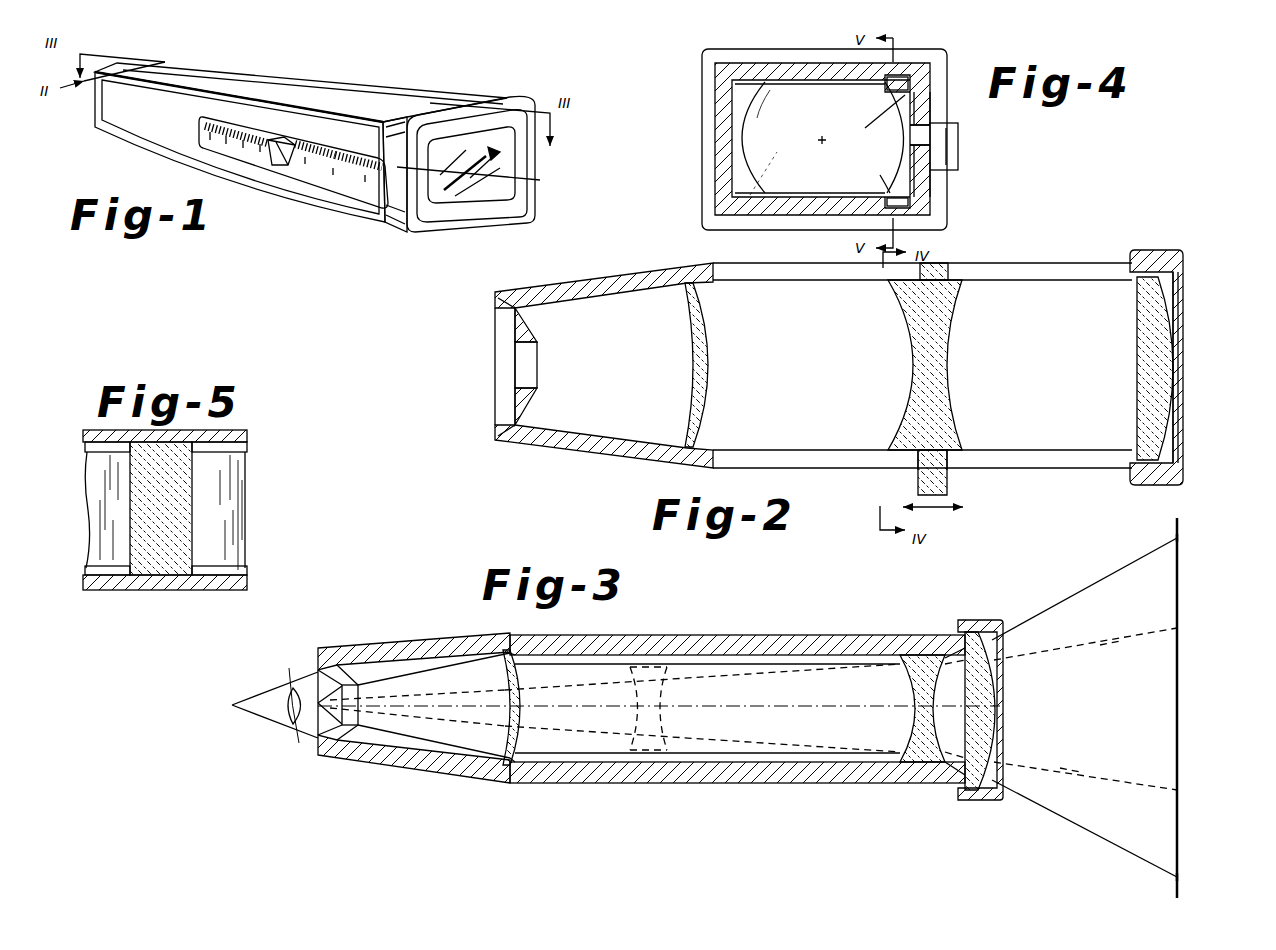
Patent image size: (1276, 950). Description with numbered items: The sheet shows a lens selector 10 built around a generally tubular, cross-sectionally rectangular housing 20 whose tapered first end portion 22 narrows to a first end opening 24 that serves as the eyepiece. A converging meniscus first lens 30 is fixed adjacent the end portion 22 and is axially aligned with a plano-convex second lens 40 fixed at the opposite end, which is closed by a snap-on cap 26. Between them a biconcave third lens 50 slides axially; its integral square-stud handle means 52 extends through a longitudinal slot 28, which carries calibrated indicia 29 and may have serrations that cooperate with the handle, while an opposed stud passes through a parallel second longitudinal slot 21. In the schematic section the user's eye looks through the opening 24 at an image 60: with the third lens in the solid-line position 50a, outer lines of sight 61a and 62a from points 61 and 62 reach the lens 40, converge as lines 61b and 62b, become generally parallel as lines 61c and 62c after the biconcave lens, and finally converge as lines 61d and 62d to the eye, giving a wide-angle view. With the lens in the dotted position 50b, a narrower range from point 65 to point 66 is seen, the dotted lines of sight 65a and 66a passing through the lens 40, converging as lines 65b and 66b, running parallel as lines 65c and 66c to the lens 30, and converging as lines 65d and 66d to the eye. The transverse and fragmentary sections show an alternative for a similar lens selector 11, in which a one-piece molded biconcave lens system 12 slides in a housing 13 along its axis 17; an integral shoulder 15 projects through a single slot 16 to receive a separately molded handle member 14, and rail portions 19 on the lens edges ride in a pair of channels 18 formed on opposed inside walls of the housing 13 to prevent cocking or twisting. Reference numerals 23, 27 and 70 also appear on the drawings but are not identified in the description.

In FIG. 1, the lens selector 10 is at (437, 84).
In FIG. 4, the lens selector 11 is at (694, 118).
In FIG. 5, the lens selector 11 is at (85, 488).
In FIG. 4, the biconcave lens system 12 is at (958, 127).
In FIG. 5, the biconcave lens system 12 is at (192, 494).
In FIG. 4, the housing 13 is at (820, 212).
In FIG. 5, the housing 13 is at (226, 590).
In FIG. 4, the handle member 14 is at (958, 157).
In FIG. 4, the shoulder 15 is at (922, 136).
In FIG. 4, the slot 16 is at (923, 118).
In FIG. 4, the axis 17 is at (820, 143).
In FIG. 4, the channels 18 is at (897, 78).
In FIG. 5, the channels 18 is at (238, 452).
In FIG. 4, the rail portions 19 is at (865, 128).
In FIG. 2, the housing 20 is at (1068, 470).
In FIG. 2, the second longitudinal slot 21 is at (1045, 282).
In FIG. 2, the first end portion 22 is at (598, 437).
In FIG. 3, the tube wall 23 is at (758, 654).
In FIG. 2, the first end opening 24 is at (502, 370).
In FIG. 3, the first end opening 24 is at (315, 728).
In FIG. 2, the snap-on cap 26 is at (1184, 470).
In FIG. 1, the distance scale 27 is at (318, 168).
In FIG. 1, the longitudinal slot 28 is at (352, 175).
In FIG. 2, the longitudinal slot 28 is at (1000, 458).
In FIG. 1, the indicia 29 is at (250, 158).
In FIG. 2, the first lens 30 is at (708, 402).
In FIG. 2, the second lens 40 is at (1138, 374).
In FIG. 3, the second lens 40 is at (990, 702).
In FIG. 2, the third lens 50 is at (945, 405).
In FIG. 3, the third lens position 50a is at (912, 765).
In FIG. 3, the third lens position 50b is at (637, 765).
In FIG. 1, the handle means 52 is at (280, 164).
In FIG. 2, the handle means 52 is at (917, 478).
In FIG. 3, the image 60 is at (1182, 527).
In FIG. 3, the point 61 is at (1180, 539).
In FIG. 3, the line of sight 61a is at (1050, 615).
In FIG. 3, the line of sight 61b is at (953, 675).
In FIG. 3, the line of sight 61c is at (722, 663).
In FIG. 3, the line of sight 61d is at (407, 695).
In FIG. 3, the point 62 is at (1180, 878).
In FIG. 3, the line of sight 62a is at (1072, 818).
In FIG. 3, the line of sight 62b is at (953, 746).
In FIG. 3, the line of sight 62c is at (738, 752).
In FIG. 3, the line of sight 62d is at (400, 738).
In FIG. 3, the point 65 is at (1182, 628).
In FIG. 3, the line of sight 65a is at (1108, 645).
In FIG. 3, the line of sight 65b is at (808, 676).
In FIG. 3, the line of sight 65c is at (548, 692).
In FIG. 3, the line of sight 65d is at (442, 693).
In FIG. 3, the point 66 is at (1182, 790).
In FIG. 3, the line of sight 66a is at (1066, 770).
In FIG. 3, the line of sight 66b is at (818, 733).
In FIG. 3, the line of sight 66c is at (567, 733).
In FIG. 3, the line of sight 66d is at (433, 723).
In FIG. 2, the window 70 is at (1160, 282).